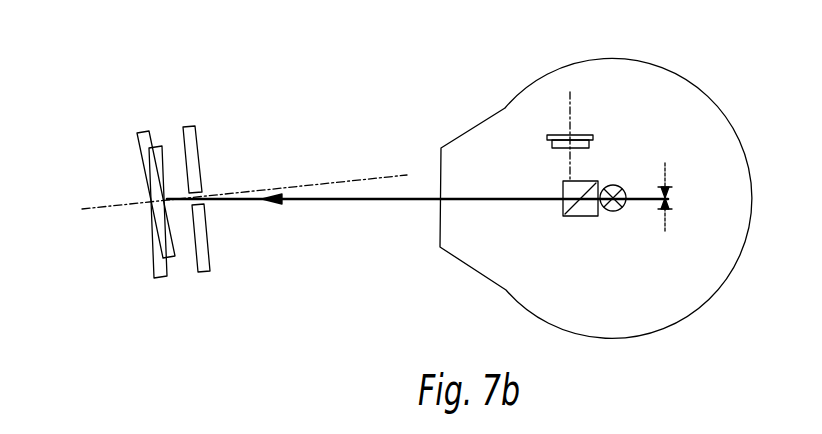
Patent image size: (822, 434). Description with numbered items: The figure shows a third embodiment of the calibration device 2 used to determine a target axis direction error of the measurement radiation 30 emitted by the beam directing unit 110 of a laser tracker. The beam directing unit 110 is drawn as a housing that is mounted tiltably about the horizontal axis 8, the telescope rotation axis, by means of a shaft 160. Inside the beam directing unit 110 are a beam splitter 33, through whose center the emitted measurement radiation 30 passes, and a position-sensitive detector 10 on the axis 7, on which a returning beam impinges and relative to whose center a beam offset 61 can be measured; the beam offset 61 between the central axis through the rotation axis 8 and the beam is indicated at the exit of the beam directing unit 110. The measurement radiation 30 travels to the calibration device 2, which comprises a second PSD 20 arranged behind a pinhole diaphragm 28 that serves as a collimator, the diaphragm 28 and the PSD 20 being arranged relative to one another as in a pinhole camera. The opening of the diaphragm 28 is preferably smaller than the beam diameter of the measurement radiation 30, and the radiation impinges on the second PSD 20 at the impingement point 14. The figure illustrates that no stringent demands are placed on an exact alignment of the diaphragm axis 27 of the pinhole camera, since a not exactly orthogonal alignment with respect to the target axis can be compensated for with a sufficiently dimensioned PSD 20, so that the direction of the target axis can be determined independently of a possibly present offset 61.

The calibration device 2 is at (192, 199).
The impingement point 14 is at (125, 194).
The second PSD 20 is at (118, 226).
The pinhole diaphragm 28 is at (164, 271).
The diaphragm axis 27 is at (244, 170).
The measurement radiation 30 is at (417, 227).
The beam directing unit 110 is at (582, 178).
The axis 7 is at (491, 128).
The position-sensitive detector (PSD) 10 is at (656, 100).
The beam splitter 33 is at (514, 243).
The horizontal axis 8 is at (646, 170).
The shaft 160 is at (672, 240).
The beam offset 61 is at (680, 199).